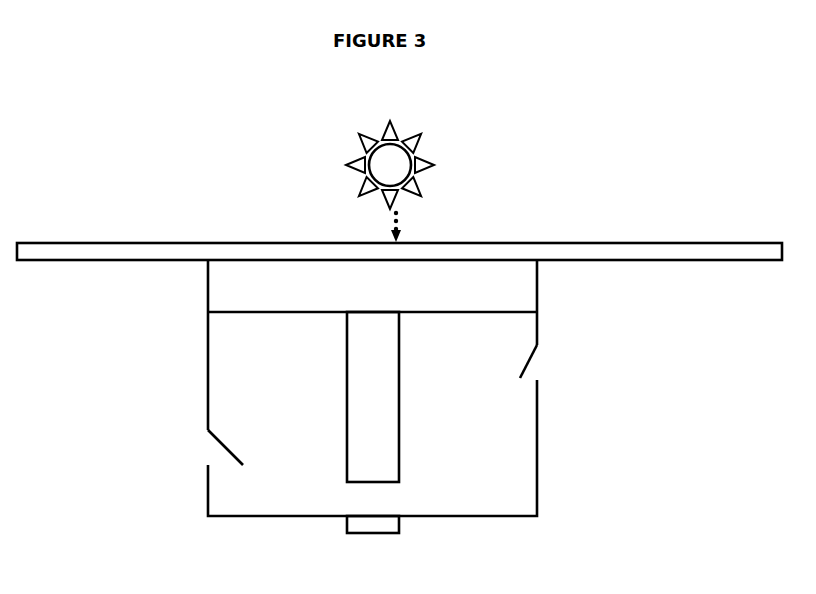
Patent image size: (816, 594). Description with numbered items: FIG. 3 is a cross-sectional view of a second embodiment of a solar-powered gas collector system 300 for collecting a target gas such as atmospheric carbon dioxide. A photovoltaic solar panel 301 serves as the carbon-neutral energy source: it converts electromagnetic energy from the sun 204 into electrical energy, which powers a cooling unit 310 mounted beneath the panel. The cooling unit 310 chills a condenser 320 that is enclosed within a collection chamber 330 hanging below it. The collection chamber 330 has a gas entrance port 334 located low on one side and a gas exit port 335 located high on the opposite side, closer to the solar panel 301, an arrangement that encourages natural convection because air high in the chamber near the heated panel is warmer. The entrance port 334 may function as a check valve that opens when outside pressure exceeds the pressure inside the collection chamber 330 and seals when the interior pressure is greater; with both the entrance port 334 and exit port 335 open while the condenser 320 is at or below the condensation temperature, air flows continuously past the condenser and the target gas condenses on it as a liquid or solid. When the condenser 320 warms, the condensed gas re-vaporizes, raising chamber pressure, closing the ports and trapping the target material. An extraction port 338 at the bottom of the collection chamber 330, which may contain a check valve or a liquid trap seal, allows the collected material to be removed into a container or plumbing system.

The sun 204 is at (341, 156).
The gas collector system 300 is at (375, 330).
The photovoltaic solar panel 301 is at (641, 240).
The cooling unit 310 is at (418, 273).
The chilled condenser 320 is at (382, 360).
The collection chamber 330 is at (206, 362).
The gas entrance port 334 is at (223, 448).
The gas exit port 335 is at (535, 362).
The extraction port 338 is at (401, 528).